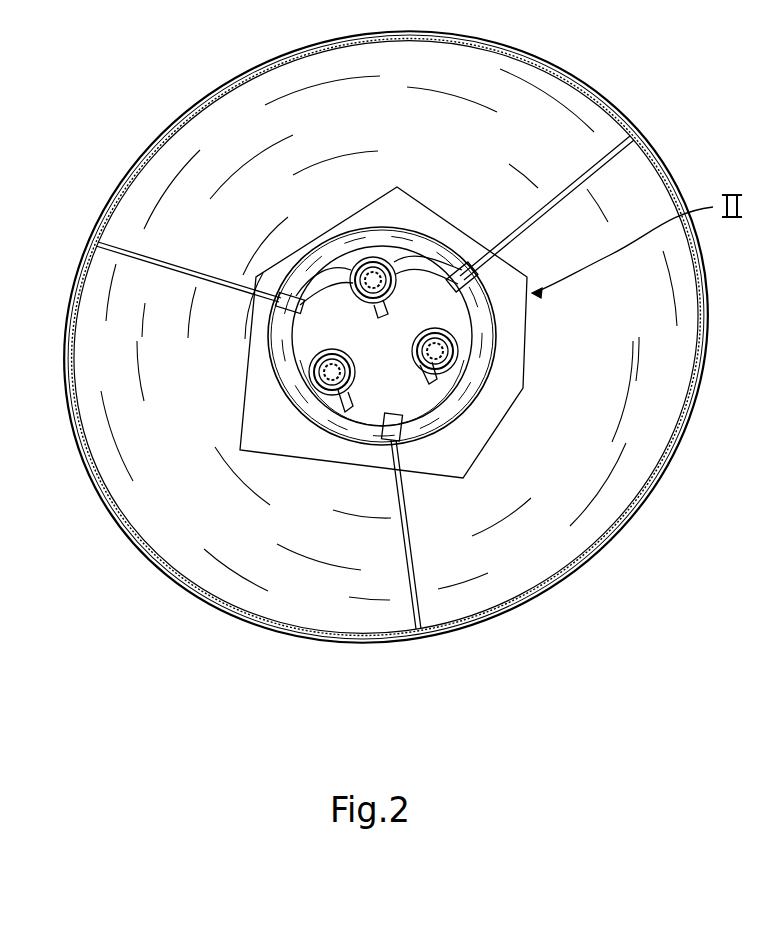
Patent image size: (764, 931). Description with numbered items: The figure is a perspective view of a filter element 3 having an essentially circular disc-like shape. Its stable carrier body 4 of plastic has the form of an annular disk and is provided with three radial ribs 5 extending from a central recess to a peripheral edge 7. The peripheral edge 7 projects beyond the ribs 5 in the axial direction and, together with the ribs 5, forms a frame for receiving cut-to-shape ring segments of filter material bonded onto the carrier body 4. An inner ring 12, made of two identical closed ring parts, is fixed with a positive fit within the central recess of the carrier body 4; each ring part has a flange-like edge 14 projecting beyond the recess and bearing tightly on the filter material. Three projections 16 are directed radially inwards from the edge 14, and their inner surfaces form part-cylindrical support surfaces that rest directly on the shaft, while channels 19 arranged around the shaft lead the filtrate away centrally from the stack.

The filter element 3 is at (537, 596).
The carrier body 4 is at (553, 497).
The radial ribs 5 is at (403, 513).
The peripheral edge 7 is at (157, 554).
The inner ring 12 is at (413, 226).
The flange-like edge 14 is at (527, 303).
The projections 16 is at (400, 300).
The channels 19 is at (333, 371).